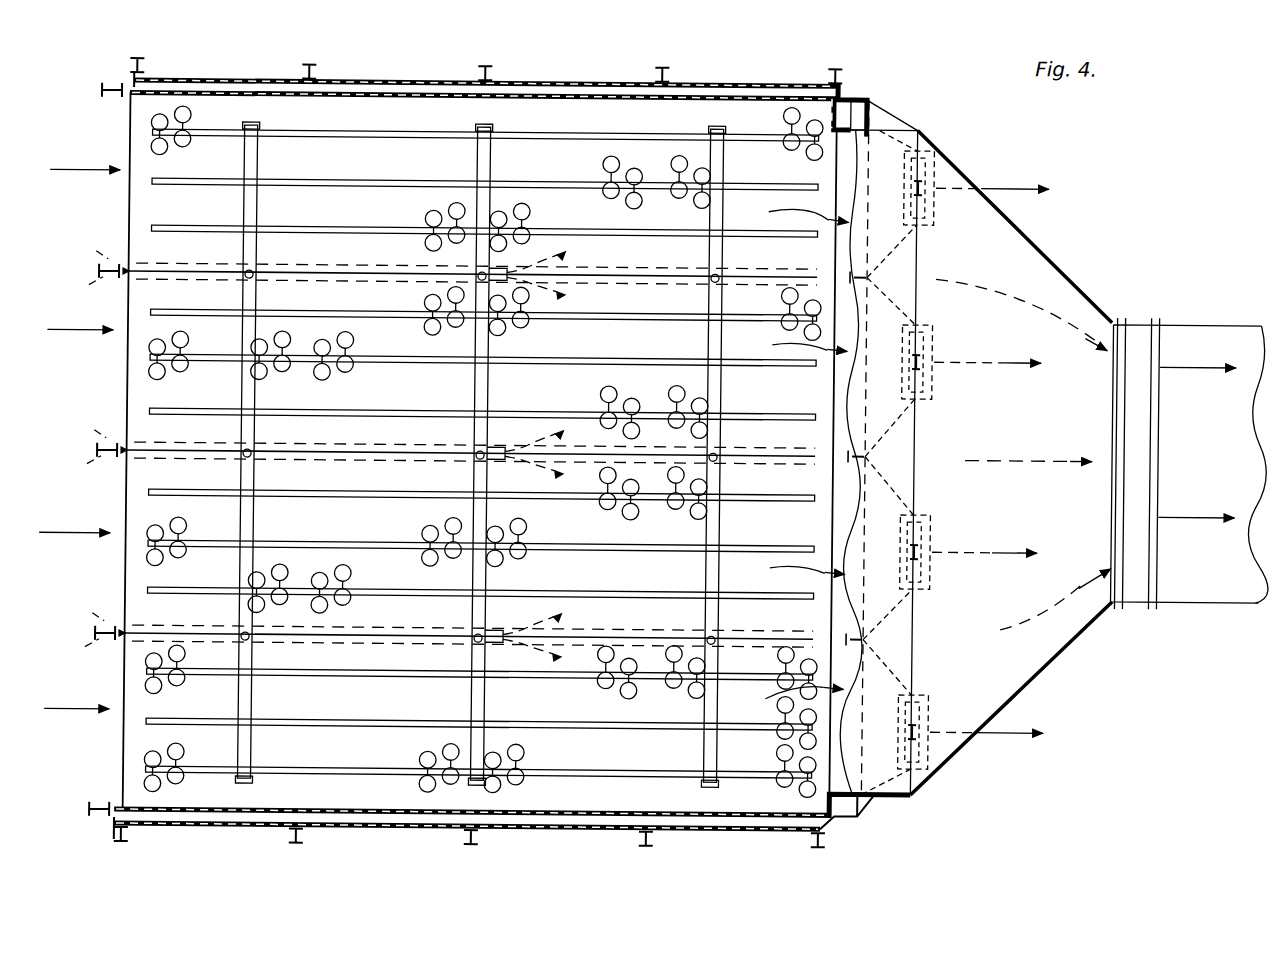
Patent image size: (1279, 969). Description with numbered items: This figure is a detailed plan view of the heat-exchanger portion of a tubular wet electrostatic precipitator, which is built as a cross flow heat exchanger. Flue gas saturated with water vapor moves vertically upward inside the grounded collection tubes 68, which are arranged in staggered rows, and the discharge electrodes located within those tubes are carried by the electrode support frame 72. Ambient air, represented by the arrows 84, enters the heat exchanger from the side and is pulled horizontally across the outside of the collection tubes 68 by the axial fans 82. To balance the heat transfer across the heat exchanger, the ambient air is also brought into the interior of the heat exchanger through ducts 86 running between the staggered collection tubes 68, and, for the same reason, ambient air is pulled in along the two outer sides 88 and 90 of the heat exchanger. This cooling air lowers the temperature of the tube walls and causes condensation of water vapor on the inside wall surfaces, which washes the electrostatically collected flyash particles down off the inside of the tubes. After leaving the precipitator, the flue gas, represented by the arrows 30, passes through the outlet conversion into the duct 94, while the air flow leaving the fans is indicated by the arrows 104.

The flue gas 30 is at (1046, 600).
The grounded collection tubes 68 is at (344, 333).
The electrode support frame 72 is at (536, 408).
The axial fans 82 is at (940, 347).
The ambient air arrows 84 is at (76, 171).
The ducts 86 is at (337, 459).
The outer side 88 is at (376, 809).
The outer side 90 is at (393, 92).
The duct 94 is at (1229, 312).
The air flow through vanes 104 is at (1016, 180).